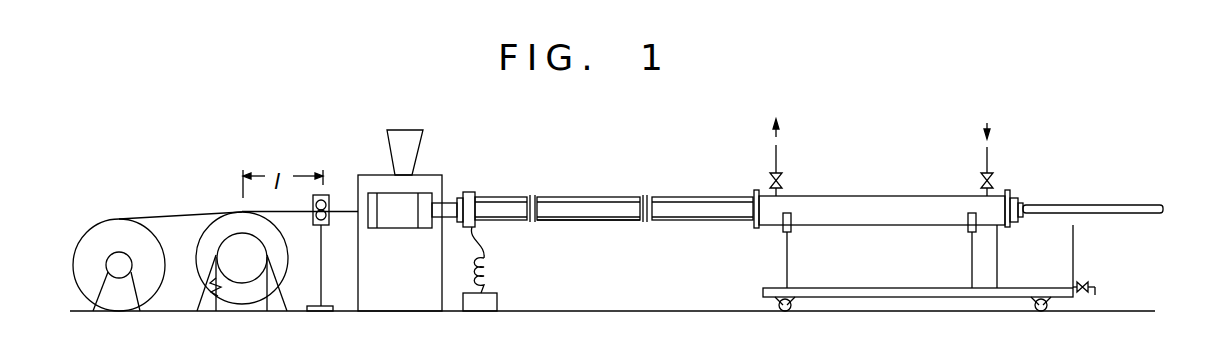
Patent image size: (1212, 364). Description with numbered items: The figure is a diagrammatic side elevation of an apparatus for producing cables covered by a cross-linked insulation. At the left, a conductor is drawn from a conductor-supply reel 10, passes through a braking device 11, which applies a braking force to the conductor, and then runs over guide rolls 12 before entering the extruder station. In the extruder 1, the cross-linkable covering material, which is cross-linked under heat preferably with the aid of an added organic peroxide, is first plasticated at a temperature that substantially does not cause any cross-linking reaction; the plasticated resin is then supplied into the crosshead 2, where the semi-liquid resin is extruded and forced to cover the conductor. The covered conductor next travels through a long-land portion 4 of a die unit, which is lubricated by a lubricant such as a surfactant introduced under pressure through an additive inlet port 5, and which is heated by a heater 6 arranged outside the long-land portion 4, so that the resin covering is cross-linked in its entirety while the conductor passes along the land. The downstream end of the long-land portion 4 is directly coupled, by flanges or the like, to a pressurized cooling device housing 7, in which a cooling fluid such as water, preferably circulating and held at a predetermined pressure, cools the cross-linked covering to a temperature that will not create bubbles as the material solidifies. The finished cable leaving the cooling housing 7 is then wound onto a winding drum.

The extruder 1 is at (367, 183).
The crosshead 2 is at (403, 220).
The long-land portion 4 is at (590, 207).
The additive inlet port 5 is at (474, 229).
The heater 6 is at (618, 221).
The pressurized cooling device housing 7 is at (878, 196).
The conductor-supply reel 10 is at (88, 243).
The braking device 11 is at (220, 228).
The guide rolls 12 is at (330, 193).